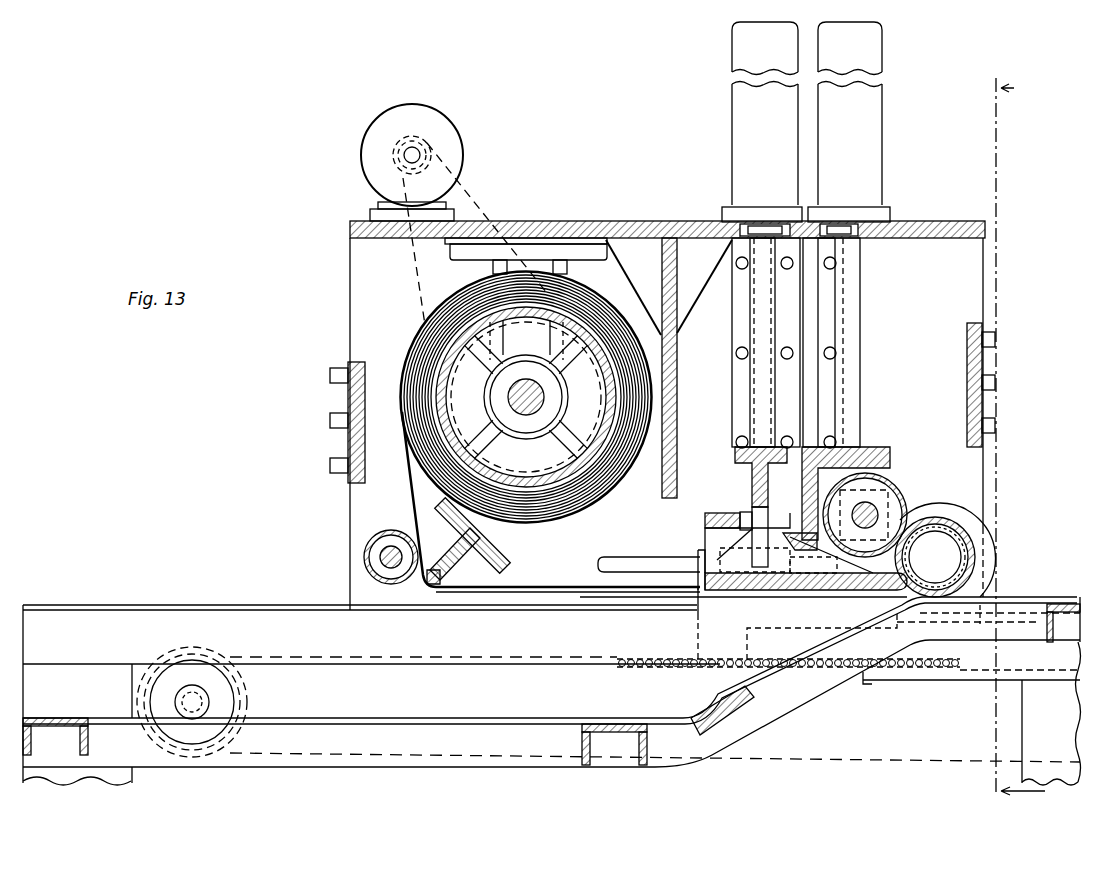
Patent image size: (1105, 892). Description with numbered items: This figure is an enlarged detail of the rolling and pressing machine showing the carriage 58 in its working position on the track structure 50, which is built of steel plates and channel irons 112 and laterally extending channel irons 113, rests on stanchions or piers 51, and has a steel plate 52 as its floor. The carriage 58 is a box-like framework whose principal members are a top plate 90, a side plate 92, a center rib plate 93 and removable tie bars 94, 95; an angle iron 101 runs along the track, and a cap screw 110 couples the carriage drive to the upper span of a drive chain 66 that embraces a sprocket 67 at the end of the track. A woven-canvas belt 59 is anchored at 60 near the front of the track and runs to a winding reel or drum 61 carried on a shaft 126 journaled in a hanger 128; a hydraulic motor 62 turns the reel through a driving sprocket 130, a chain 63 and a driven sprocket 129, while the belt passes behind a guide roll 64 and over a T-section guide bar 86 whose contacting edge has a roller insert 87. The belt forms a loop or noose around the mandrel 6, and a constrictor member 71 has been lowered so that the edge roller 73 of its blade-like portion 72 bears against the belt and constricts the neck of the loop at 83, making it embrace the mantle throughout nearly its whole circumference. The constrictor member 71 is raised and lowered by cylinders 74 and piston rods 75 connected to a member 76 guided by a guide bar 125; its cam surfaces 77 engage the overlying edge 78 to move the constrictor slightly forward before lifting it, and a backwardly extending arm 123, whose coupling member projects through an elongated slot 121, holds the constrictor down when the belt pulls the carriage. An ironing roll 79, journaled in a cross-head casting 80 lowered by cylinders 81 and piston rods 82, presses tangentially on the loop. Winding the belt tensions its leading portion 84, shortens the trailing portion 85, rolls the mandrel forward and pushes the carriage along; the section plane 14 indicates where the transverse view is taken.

The mandrel 6 is at (963, 533).
The section line 14- 14 is at (1000, 438).
The track structure 50 is at (1007, 596).
The stanchions or piers 51 is at (133, 775).
The steel plate 52 is at (1048, 604).
The carriage 58 is at (345, 242).
The belt 59 is at (405, 492).
The belt anchorage 60 is at (712, 700).
The winding reel or drum 61 is at (580, 466).
The hydraulic motor 62 is at (371, 131).
The drive chain 63 is at (468, 199).
The guide roll 64 is at (368, 548).
The drive chain 66 is at (637, 655).
The sprocket 67 is at (238, 709).
The constrictor member 71 is at (706, 520).
The blade-like portion 72 is at (738, 583).
The edge roller 73 is at (898, 586).
The cylinders 74 is at (735, 85).
The piston rods 75 is at (747, 322).
The cam-carrying member 76 is at (750, 474).
The cam surfaces 77 is at (712, 546).
The overlying edge 78 is at (731, 513).
The ironing roll 79 is at (900, 493).
The cross-head casting 80 is at (879, 447).
The cylinders 81 is at (882, 85).
The piston rods 82 is at (858, 333).
The neck of the loop 83 is at (893, 600).
The leading portion of the belt 84 is at (551, 588).
The trailing portion of the belt 85 is at (812, 651).
The guide bar 86 is at (495, 540).
The roller insert 87 is at (433, 590).
The top plate 90 is at (565, 220).
The side plate 92 is at (987, 300).
The center rib plate 93 is at (678, 385).
The tie bar 94 is at (338, 400).
The tie bar 95 is at (990, 368).
The angle iron 101 is at (262, 610).
The cap screw 110 is at (868, 684).
The channel iron 112 is at (447, 768).
The channel irons 113 is at (89, 745).
The elongated slot 121 is at (638, 557).
The backwardly extending arm 123 is at (780, 588).
The guide bar 125 is at (828, 405).
The shaft 126 is at (514, 397).
The hanger 128 is at (490, 266).
The driven sprocket 129 is at (604, 420).
The driving sprocket 130 is at (420, 141).